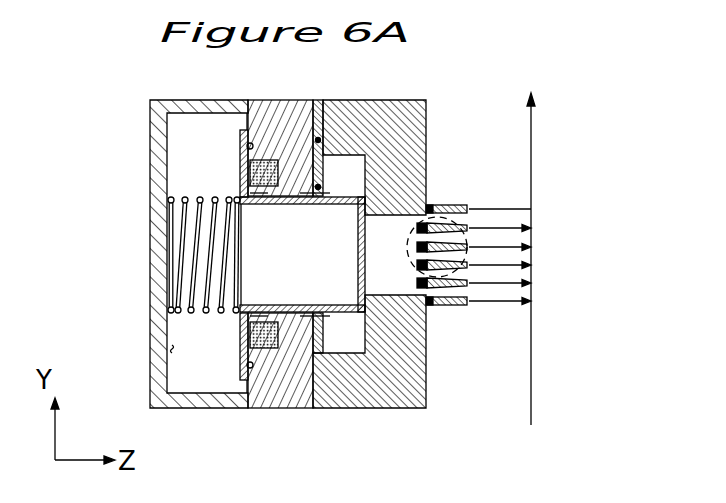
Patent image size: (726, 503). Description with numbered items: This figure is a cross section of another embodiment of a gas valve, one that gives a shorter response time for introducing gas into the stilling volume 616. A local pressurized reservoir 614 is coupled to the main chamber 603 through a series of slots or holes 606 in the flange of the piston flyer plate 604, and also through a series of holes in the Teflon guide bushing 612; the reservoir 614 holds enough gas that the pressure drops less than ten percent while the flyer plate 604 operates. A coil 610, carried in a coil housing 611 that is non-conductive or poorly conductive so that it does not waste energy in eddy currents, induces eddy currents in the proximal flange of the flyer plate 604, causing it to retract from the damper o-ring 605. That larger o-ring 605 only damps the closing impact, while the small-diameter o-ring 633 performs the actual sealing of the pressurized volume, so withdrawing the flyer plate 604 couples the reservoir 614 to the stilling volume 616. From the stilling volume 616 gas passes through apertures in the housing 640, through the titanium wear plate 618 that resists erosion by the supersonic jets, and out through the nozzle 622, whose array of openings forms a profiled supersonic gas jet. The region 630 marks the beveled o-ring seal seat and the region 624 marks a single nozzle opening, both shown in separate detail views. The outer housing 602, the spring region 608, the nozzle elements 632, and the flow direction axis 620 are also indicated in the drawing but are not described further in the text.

The housing 602 is at (153, 168).
The main chamber 603 is at (165, 354).
The piston flyer plate 604 is at (240, 148).
The damper o-ring 605 is at (240, 369).
The slots or holes 606 is at (236, 192).
The spring 608 is at (172, 298).
The coil 610 is at (244, 343).
The coil housing 611 is at (276, 408).
The Teflon guide bushing 612 is at (320, 152).
The reservoir 614 is at (352, 167).
The stilling volume 616 is at (397, 277).
The titanium plate 618 is at (428, 308).
The flow direction axis 620 is at (533, 163).
The nozzle 622 is at (455, 207).
The region 624 is at (471, 210).
The region 630 is at (283, 128).
The nozzle elements 632 is at (410, 243).
The o-ring 633 is at (362, 306).
The housing 640 is at (416, 408).